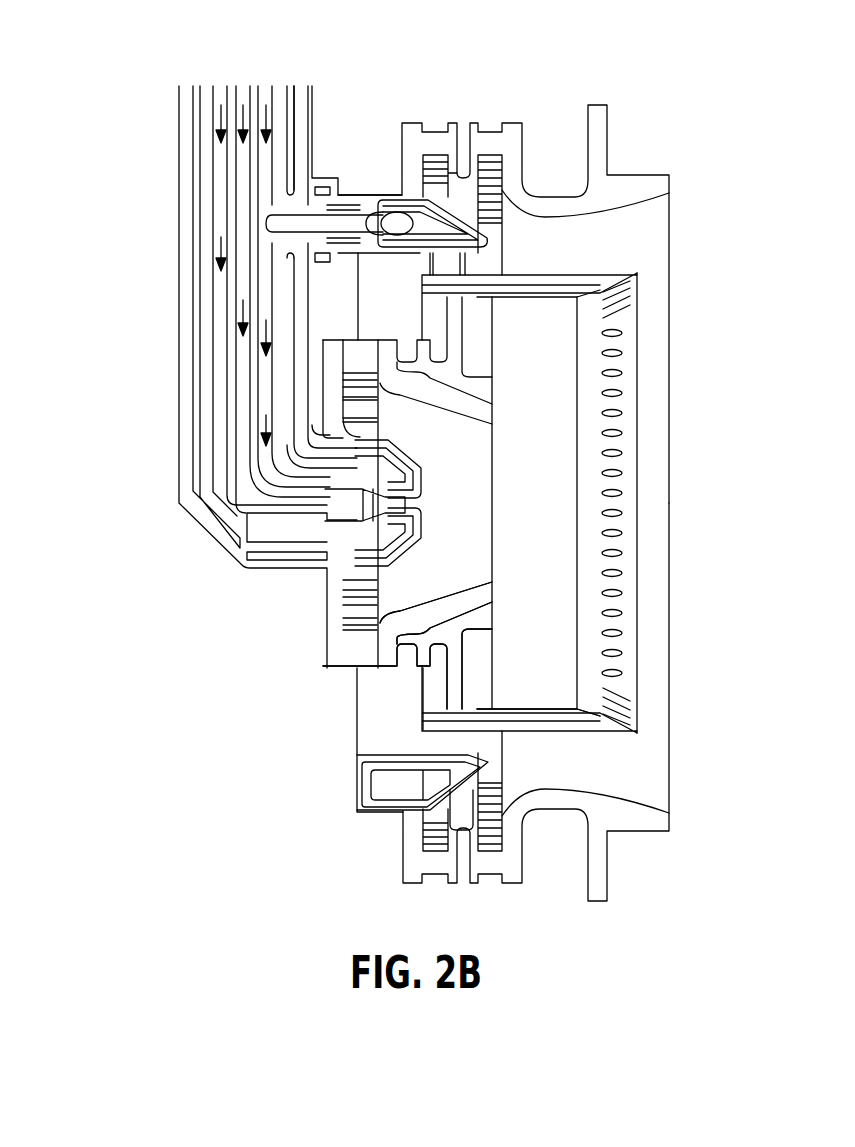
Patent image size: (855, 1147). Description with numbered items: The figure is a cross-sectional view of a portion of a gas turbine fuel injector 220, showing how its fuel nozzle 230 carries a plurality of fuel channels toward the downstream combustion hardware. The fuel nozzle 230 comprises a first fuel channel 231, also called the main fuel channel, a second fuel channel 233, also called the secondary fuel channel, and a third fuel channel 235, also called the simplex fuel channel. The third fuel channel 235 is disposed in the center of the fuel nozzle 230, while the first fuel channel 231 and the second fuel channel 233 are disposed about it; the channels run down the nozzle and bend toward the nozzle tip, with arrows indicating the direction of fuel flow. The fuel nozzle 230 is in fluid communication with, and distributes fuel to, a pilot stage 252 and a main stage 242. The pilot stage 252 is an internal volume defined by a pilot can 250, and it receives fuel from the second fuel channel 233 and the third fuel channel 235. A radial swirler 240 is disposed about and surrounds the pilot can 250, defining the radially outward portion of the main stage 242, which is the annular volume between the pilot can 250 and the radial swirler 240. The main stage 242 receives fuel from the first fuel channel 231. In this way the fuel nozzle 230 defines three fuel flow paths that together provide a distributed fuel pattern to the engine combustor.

The fuel injector 220 is at (135, 168).
The fuel nozzle 230 is at (177, 352).
The first fuel channel 231 is at (272, 121).
The second fuel channel 233 is at (222, 118).
The third fuel channel 235 is at (265, 118).
The radial swirler 240 is at (638, 188).
The main stage 242 is at (627, 235).
The pilot can 250 is at (637, 277).
The pilot stage 252 is at (448, 515).